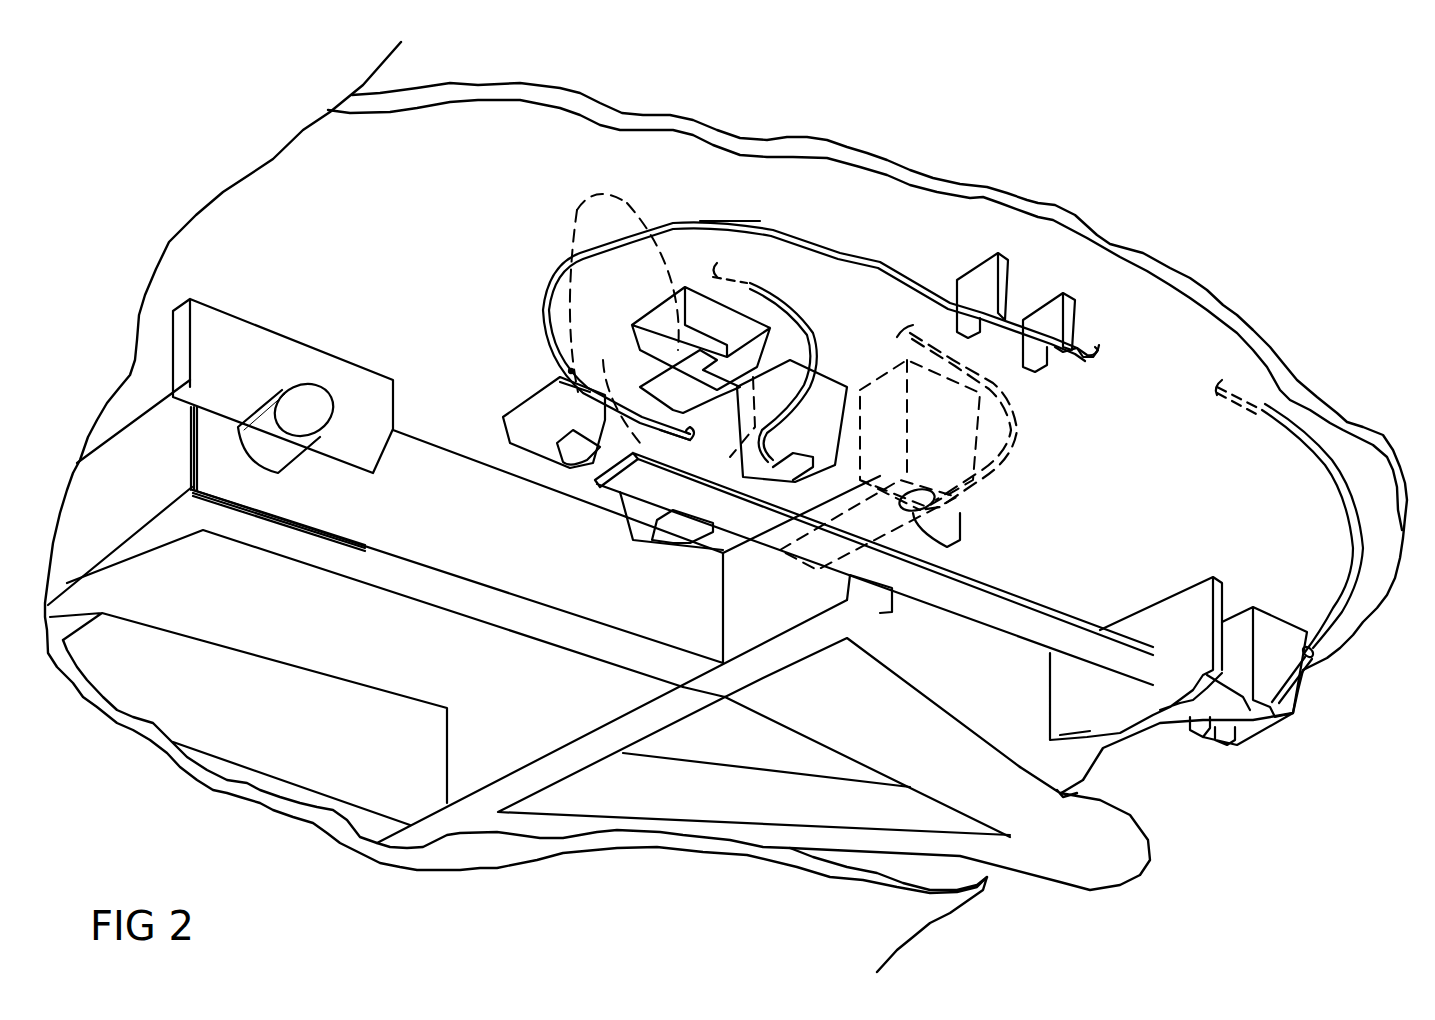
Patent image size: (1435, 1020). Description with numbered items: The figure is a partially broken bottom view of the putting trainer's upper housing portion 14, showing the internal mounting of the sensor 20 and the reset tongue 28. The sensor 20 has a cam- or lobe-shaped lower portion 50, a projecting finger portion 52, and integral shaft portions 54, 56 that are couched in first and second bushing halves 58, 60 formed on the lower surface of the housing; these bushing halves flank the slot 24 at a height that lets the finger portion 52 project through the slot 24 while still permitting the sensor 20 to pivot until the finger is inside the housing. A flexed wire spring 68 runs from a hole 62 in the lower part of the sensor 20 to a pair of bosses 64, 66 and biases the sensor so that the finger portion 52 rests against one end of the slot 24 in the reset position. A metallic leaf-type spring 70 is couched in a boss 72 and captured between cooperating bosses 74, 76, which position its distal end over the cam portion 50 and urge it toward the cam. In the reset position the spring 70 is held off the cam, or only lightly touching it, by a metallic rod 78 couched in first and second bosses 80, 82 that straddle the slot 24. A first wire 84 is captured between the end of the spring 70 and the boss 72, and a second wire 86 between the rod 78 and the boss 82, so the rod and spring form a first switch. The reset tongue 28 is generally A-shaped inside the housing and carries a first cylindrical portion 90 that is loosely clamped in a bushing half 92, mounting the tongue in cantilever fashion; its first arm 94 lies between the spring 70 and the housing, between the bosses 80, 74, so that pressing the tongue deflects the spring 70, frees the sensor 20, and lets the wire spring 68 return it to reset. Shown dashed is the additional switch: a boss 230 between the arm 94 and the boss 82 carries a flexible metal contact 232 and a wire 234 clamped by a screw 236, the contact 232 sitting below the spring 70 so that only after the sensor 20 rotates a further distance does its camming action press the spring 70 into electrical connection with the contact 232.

The upper housing portion 14 is at (808, 208).
The sensor 20 is at (565, 305).
The slot 24 is at (569, 370).
The reset tongue 28 is at (1070, 893).
The cam-shaped lower portion 50 is at (588, 391).
The finger portion 52 is at (580, 212).
The shaft portion 54 is at (565, 455).
The shaft portion 56 is at (666, 394).
The first bushing half 58 is at (550, 425).
The second bushing half 60 is at (713, 339).
The hole 62 is at (698, 441).
The boss 64 is at (975, 277).
The boss 66 is at (1055, 307).
The wire spring 68 is at (717, 220).
The leaf-type spring 70 is at (991, 622).
The boss 72 is at (1270, 622).
The boss 74 is at (1170, 618).
The boss 76 is at (1109, 704).
The metallic rod 78 is at (676, 545).
The first boss 80 is at (630, 522).
The second boss 82 is at (798, 429).
The first wire 84 is at (1315, 455).
The second wire 86 is at (813, 328).
The first cylindrical portion 90 is at (254, 454).
The bushing half 92 is at (226, 376).
The first arm 94 is at (962, 540).
The boss 230 is at (927, 436).
The flexible metal contact 232 is at (802, 560).
The wire 234 is at (1020, 440).
The screw 236 is at (965, 513).